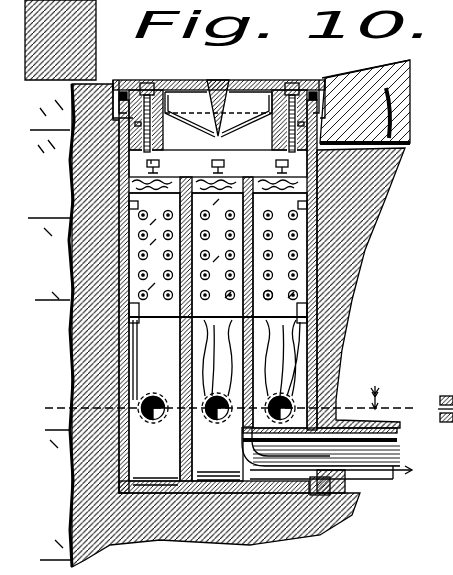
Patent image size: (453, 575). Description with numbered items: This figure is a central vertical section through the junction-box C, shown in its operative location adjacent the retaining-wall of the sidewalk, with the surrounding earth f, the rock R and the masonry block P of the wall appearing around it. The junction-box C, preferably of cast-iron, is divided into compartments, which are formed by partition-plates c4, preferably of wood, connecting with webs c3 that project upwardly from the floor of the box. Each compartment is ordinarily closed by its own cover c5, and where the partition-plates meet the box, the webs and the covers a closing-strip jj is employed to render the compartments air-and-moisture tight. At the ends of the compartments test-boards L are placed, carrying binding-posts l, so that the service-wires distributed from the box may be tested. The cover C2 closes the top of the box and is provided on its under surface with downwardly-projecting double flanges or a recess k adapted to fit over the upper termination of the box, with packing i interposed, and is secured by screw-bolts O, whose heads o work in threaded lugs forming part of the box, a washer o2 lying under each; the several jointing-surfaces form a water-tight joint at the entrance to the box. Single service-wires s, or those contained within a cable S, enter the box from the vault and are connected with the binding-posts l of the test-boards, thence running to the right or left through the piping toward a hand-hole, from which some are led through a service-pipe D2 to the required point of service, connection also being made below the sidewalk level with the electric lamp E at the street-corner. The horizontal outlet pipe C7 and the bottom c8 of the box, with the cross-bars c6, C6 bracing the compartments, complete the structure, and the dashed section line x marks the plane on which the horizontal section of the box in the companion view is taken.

The pier / foundation block P is at (60, 40).
The earth / ground f is at (194, 325).
The closing-strip jj is at (307, 205).
The rock R is at (371, 101).
The junction-box C is at (313, 258).
The cover C2 is at (205, 84).
The screw-bolts O is at (294, 90).
The bolt head o is at (287, 83).
The packing i is at (318, 94).
The downwardly-projecting double flanges or recess k is at (327, 107).
The washer o2 is at (219, 141).
The cover c5 is at (280, 172).
The webs c3 is at (250, 474).
The test-boards L is at (218, 255).
The binding-posts l is at (220, 248).
The electric lamp E is at (277, 248).
The cross bar c6 is at (140, 322).
The cross bar C6 is at (313, 315).
The partition-plates c4 is at (241, 379).
The service-wires s is at (325, 345).
The service-pipe D2 is at (337, 408).
The outlet pipe C7 is at (327, 461).
The cable S is at (410, 471).
The bottom c8 is at (320, 486).
The section line x is at (225, 403).